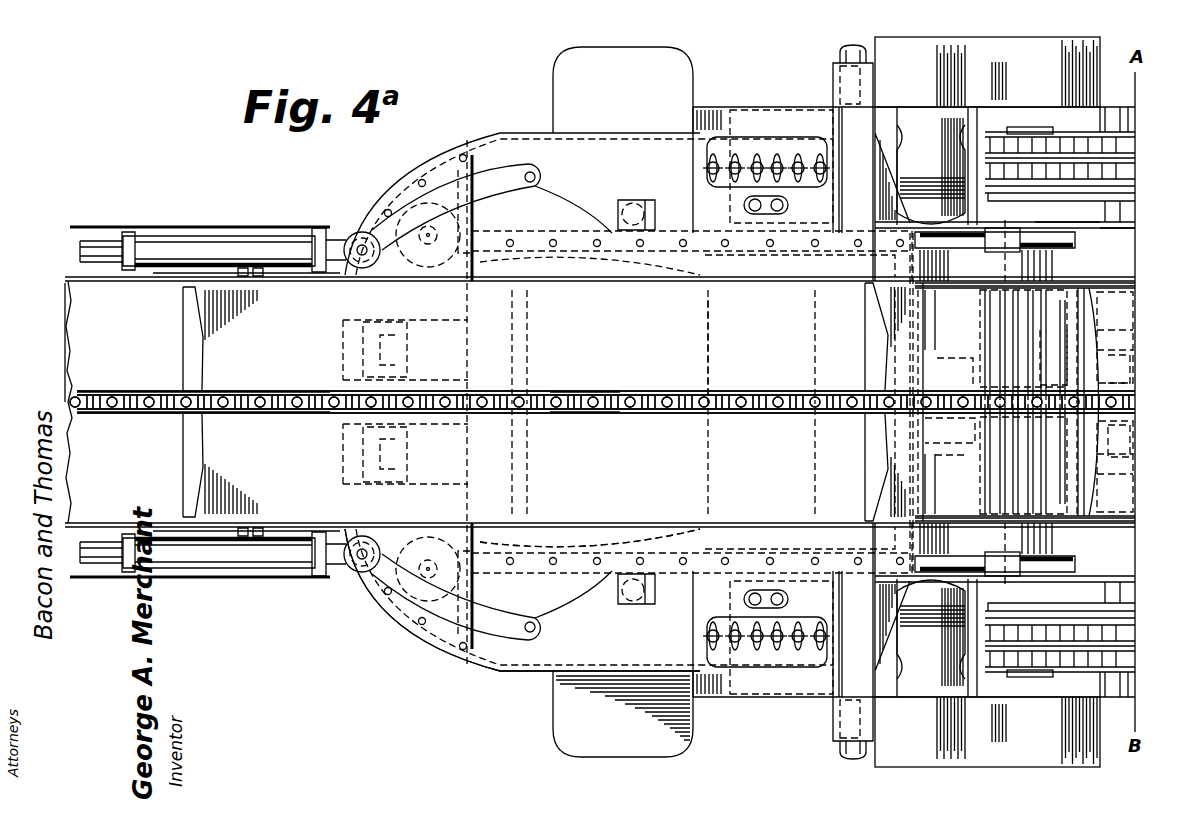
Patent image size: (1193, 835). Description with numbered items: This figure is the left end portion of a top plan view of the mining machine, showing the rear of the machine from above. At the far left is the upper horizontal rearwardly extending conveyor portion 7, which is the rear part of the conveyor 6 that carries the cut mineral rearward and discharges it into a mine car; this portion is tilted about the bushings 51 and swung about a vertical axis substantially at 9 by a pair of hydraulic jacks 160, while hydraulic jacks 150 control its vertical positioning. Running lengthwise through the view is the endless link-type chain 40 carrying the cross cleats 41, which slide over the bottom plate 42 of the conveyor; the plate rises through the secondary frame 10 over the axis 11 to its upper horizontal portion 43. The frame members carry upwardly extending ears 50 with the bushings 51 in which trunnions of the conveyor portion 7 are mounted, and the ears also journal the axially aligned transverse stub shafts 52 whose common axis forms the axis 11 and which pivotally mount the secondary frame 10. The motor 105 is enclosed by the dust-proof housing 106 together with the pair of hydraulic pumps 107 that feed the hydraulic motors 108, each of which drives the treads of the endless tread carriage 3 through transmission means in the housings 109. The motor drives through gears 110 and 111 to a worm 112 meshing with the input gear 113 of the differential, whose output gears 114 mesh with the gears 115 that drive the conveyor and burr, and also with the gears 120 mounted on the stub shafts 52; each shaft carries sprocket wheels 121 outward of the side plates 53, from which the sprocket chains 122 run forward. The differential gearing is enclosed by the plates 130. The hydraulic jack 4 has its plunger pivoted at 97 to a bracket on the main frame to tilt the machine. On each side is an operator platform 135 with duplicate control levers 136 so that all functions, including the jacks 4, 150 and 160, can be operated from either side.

The endless tread carriage 3 is at (1127, 107).
The hydraulic jack 4 is at (833, 76).
The conveyor 6 is at (1130, 375).
The upper horizontal rearwardly extending conveyor portion 7 is at (85, 318).
The vertical swing axis 9 is at (584, 393).
The secondary frame 10 is at (1127, 227).
The pivot axis 11 is at (1040, 225).
The endless link-type chain 40 is at (265, 392).
The cross cleats 41 is at (200, 354).
The bottom plate 42 is at (1130, 442).
The upper horizontal portion of the bottom plate 43 is at (738, 351).
The upwardly extending ears 50 is at (978, 250).
The bushings 51 is at (1003, 230).
The transverse stub shafts 52 is at (1068, 283).
The side plates of the secondary frame 53 is at (1112, 232).
The plunger pivot 97 is at (850, 62).
The motor 105 is at (590, 541).
The dust-proof housing 106 is at (480, 665).
The hydraulic pumps 107 is at (402, 320).
The hydraulic motors 108 is at (945, 128).
The transmission housings 109 is at (1045, 48).
The gear 110 is at (950, 358).
The gear 111 is at (935, 455).
The worm 112 is at (925, 418).
The input gear of the differential 113 is at (1049, 381).
The output gears of the differential 114 is at (1133, 322).
The gears 115 is at (1133, 340).
The gears 120 is at (980, 322).
The sprocket wheels 121 is at (1045, 127).
The sprocket chains 122 is at (1133, 144).
The housing plates 130 is at (1136, 283).
The operator platform 135 is at (563, 93).
The control levers 136 is at (773, 120).
The hydraulic jacks 150 is at (633, 198).
The hydraulic jacks 160 is at (233, 235).